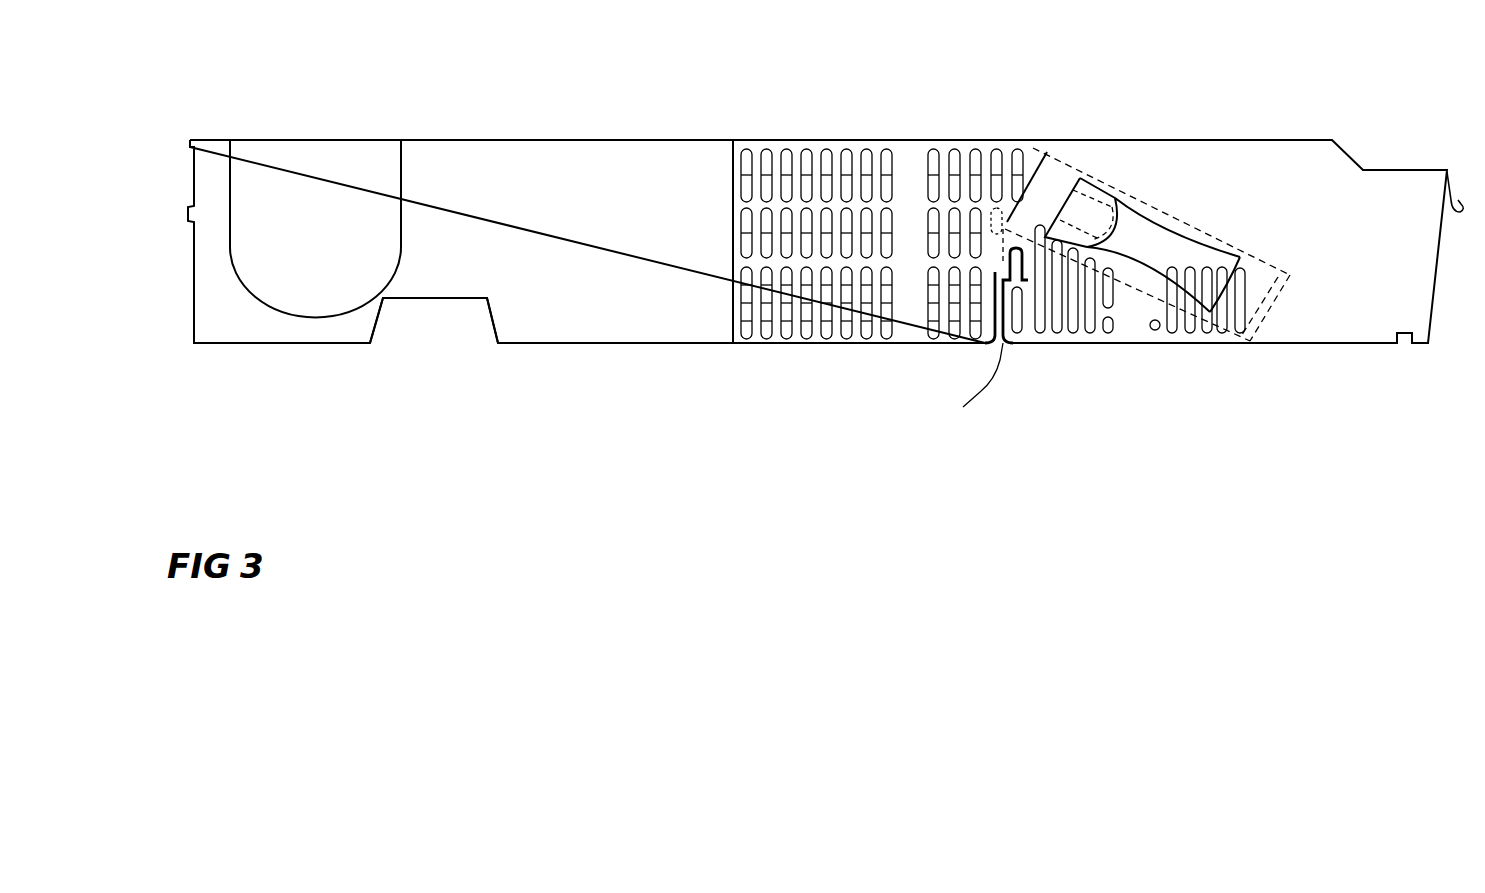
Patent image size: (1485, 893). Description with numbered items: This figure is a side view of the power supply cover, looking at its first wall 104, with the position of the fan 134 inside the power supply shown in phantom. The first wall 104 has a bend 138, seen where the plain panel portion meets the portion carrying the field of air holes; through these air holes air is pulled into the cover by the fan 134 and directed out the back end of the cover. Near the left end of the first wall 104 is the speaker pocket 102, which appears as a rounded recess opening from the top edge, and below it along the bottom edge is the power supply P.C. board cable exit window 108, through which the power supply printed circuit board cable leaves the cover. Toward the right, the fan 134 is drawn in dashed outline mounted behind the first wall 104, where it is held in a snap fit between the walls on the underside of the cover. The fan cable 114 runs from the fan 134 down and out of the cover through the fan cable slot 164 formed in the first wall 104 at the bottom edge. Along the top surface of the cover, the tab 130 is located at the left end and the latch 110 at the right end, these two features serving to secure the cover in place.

The first wall 104 is at (1277, 157).
The tab 130 is at (192, 140).
The speaker pocket 102 is at (382, 177).
The power supply P.C. board cable exit window 108 is at (433, 330).
The bend 138 is at (735, 128).
The fan cable slot 164 is at (995, 272).
The fan cable 114 is at (980, 392).
The fan 134 is at (1167, 298).
The latch 110 is at (1463, 207).